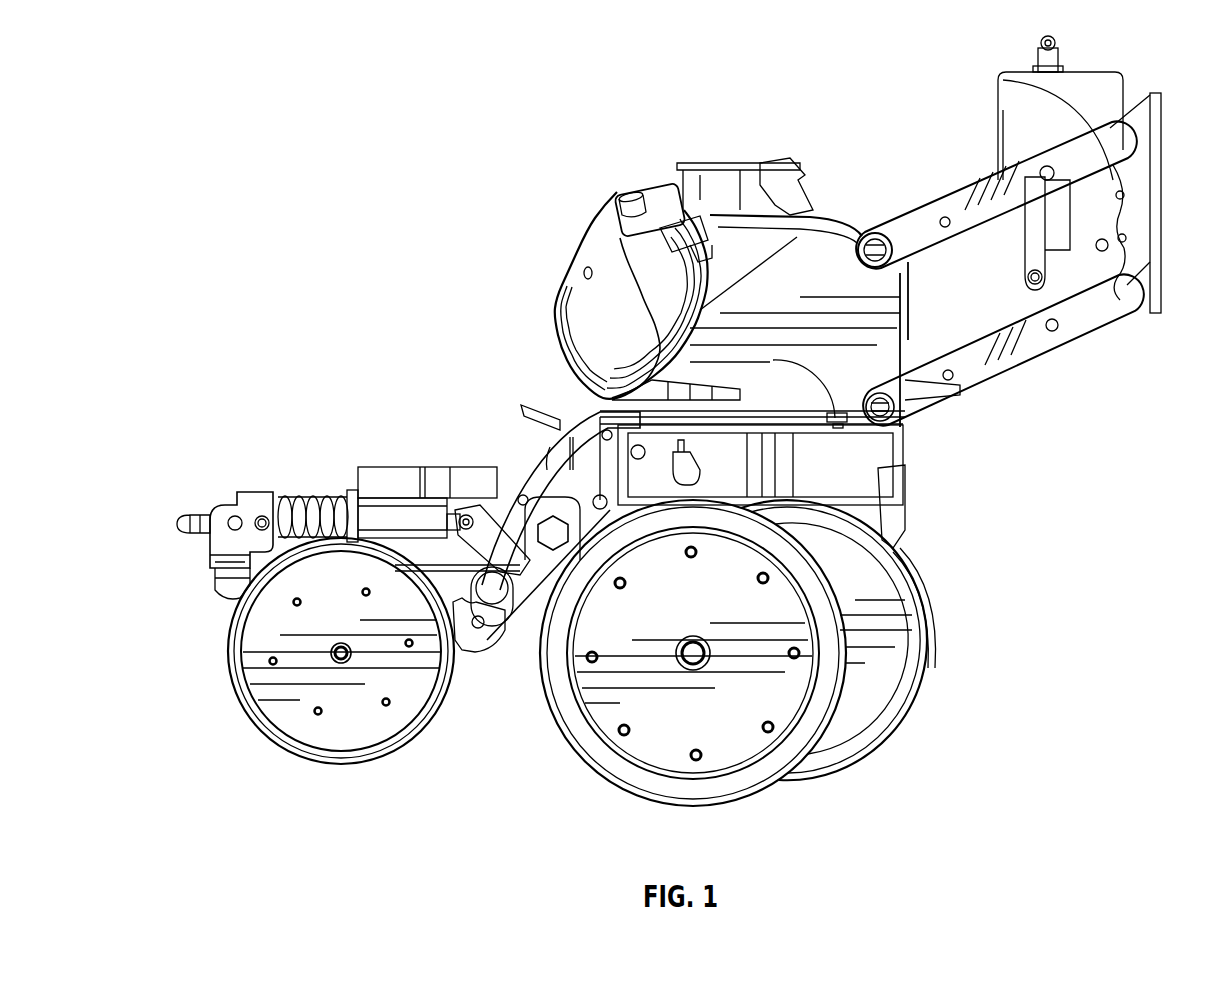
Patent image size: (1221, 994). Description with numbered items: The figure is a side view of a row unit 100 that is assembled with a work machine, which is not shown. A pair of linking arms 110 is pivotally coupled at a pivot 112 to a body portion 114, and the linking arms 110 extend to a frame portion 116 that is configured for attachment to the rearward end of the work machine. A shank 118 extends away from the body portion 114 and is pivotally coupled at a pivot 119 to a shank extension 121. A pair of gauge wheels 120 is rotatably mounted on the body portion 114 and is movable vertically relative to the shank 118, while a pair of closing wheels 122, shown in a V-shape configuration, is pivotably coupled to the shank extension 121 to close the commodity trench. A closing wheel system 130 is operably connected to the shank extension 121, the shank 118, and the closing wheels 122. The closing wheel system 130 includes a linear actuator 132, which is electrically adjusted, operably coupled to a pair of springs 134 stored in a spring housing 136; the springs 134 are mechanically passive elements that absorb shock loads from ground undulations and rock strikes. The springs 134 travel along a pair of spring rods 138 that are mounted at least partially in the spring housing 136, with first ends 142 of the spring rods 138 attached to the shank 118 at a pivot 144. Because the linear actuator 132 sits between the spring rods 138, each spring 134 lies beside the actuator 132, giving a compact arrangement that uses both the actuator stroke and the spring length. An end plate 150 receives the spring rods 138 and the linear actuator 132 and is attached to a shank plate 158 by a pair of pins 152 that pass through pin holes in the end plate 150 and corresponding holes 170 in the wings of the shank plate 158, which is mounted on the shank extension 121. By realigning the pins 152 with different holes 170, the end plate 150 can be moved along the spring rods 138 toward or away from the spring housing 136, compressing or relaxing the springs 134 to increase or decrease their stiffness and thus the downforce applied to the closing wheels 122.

The row unit 100 is at (428, 250).
The pair of linking arms 110 is at (960, 355).
The pivot 112 is at (873, 245).
The body portion 114 is at (775, 273).
The frame portion 116 is at (1145, 252).
The shank 118 is at (548, 470).
The pivot 119 is at (495, 590).
The pair of gauge wheels 120 is at (603, 692).
The shank extension 121 is at (467, 640).
The pair of closing wheels 122 is at (378, 712).
The closing wheel system 130 is at (332, 358).
The linear actuator 132 is at (417, 488).
The pair of springs 134 is at (303, 503).
The spring housing 136 is at (368, 518).
The pair of spring rods 138 is at (200, 517).
The first ends 142 is at (467, 514).
The pivot 144 is at (472, 505).
The end plate 150 is at (252, 500).
The pair of pins 152 is at (262, 516).
The shank plate 158 is at (226, 578).
The holes 170 is at (235, 516).